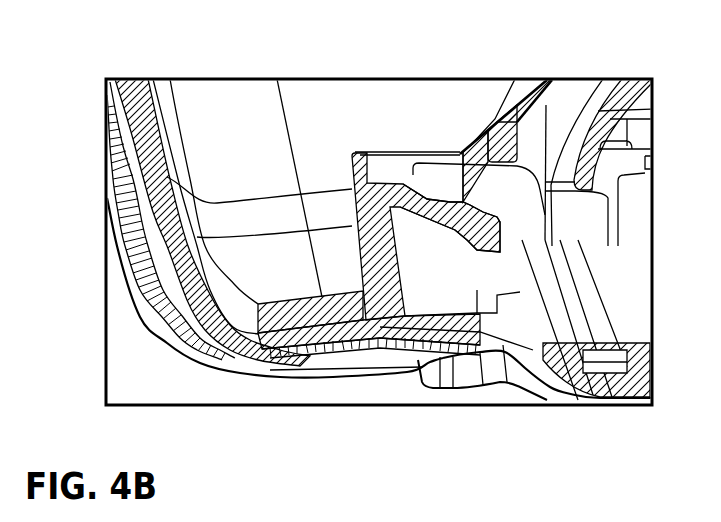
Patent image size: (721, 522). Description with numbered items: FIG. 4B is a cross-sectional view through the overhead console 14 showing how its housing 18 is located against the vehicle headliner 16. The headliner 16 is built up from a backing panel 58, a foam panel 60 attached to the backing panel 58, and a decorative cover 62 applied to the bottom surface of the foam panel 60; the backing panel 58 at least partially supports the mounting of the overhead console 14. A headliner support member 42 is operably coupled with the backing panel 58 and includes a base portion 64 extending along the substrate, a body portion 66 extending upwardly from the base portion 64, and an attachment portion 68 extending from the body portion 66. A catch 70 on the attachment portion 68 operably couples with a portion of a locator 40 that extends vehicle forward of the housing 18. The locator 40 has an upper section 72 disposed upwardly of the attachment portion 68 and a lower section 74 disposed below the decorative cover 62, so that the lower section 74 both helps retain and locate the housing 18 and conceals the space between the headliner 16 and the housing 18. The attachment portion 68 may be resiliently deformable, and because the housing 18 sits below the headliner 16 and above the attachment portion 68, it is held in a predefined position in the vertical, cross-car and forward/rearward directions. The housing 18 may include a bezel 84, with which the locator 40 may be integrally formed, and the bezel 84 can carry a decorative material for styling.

The overhead console 14 is at (648, 104).
The headliner 16 is at (148, 112).
The housing 18 is at (588, 400).
The locator 40 is at (453, 390).
The headliner support member 42 is at (360, 308).
The backing panel 58 is at (147, 283).
The foam panel 60 is at (177, 322).
The decorative cover 62 is at (183, 347).
The base portion 64 is at (388, 321).
The body portion 66 is at (350, 207).
The attachment portion 68 is at (420, 197).
The catch 70 is at (463, 202).
The upper section 72 is at (506, 179).
The lower section 74 is at (497, 387).
The bezel 84 is at (635, 398).